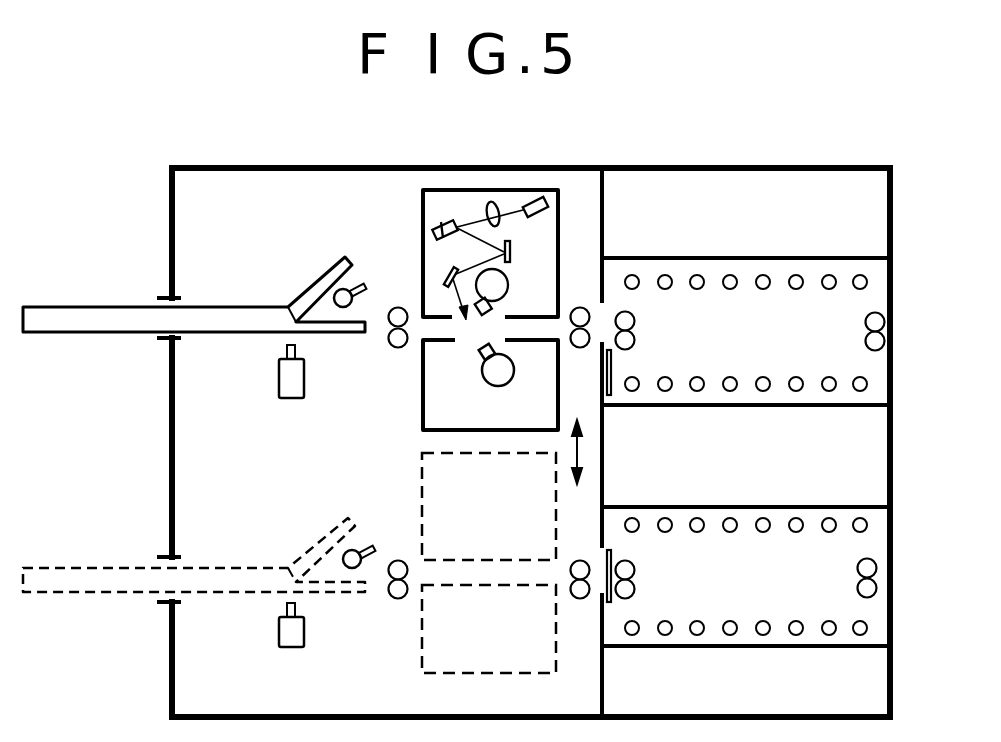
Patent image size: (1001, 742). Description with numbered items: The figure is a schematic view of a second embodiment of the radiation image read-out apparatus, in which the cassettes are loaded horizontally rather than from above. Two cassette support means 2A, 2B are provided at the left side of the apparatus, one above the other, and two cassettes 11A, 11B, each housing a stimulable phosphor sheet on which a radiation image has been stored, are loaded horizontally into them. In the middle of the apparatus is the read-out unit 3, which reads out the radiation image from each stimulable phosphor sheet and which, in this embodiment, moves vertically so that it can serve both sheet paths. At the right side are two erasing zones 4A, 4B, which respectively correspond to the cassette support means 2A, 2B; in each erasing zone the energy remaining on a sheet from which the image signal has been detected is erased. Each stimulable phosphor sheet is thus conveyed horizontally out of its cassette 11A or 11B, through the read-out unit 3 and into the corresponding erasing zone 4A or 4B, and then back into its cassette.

The read-out unit 3 is at (503, 190).
The cassette support means 2A is at (150, 273).
The cassette support means 2B is at (148, 543).
The cassette 11A is at (93, 306).
The cassette 11B is at (78, 566).
The erasing zone 4A is at (877, 275).
The erasing zone 4B is at (877, 527).